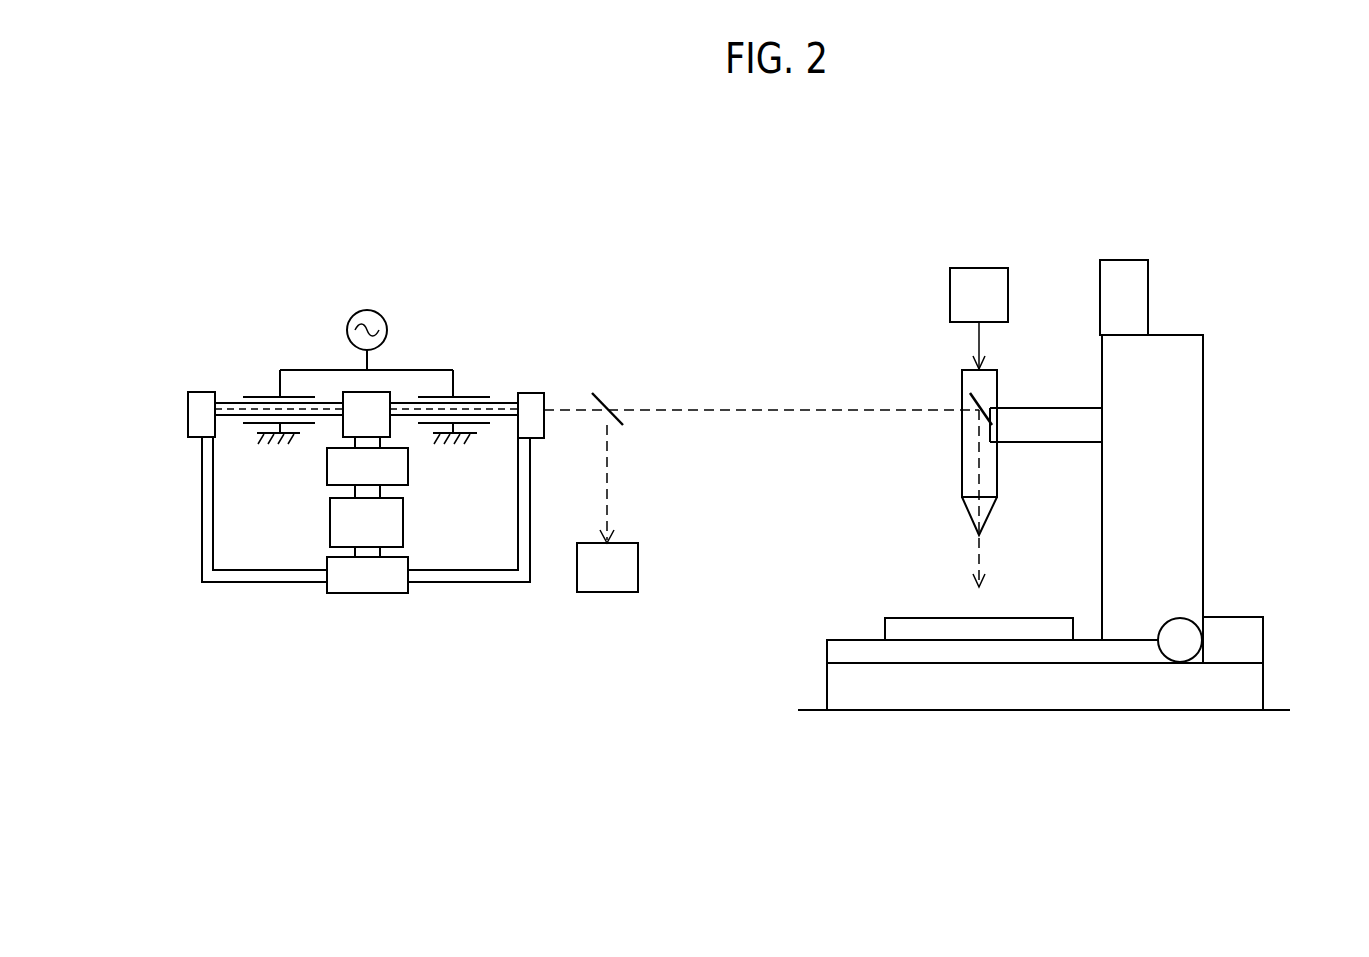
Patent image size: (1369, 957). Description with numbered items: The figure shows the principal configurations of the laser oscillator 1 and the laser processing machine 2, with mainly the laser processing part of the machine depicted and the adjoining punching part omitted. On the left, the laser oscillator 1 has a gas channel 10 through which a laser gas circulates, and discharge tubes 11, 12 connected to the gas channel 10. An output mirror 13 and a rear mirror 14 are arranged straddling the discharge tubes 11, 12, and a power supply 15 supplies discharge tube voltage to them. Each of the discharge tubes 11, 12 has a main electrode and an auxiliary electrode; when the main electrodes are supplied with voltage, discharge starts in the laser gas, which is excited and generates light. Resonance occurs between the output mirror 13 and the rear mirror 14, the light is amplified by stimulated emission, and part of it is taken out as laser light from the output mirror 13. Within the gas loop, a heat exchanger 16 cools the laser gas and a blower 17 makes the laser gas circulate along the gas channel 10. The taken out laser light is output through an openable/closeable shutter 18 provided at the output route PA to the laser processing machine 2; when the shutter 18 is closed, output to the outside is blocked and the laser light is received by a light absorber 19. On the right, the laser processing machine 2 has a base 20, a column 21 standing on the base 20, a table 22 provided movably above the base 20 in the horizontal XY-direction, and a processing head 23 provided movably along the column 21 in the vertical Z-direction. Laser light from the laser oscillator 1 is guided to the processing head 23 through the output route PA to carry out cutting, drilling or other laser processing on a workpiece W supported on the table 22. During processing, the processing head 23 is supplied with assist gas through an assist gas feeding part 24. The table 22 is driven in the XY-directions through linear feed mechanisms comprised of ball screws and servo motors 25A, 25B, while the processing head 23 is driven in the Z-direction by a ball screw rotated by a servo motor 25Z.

The laser oscillator 1 is at (510, 242).
The laser processing machine 2 is at (1225, 217).
The gas channel 10 is at (202, 523).
The discharge tube 11 is at (270, 395).
The discharge tube 12 is at (470, 397).
The output mirror 13 is at (532, 393).
The rear mirror 14 is at (200, 392).
The power supply 15 is at (378, 316).
The heat exchanger 16 is at (405, 473).
The blower 17 is at (330, 522).
The shutter 18 is at (601, 401).
The light absorber 19 is at (638, 570).
The output route PA is at (757, 408).
The base 20 is at (1252, 697).
The column 21 is at (1203, 488).
The table 22 is at (833, 650).
The processing head 23 is at (962, 448).
The assist gas feeding part 24 is at (983, 275).
The servo motor 25Z is at (1143, 312).
The servo motor 25A is at (1173, 652).
The servo motor 25B is at (1252, 640).
The workpiece W is at (923, 618).